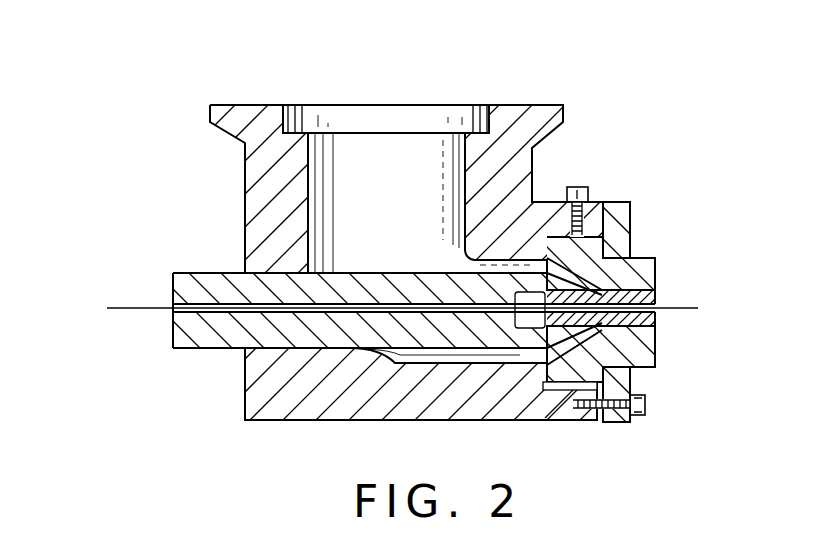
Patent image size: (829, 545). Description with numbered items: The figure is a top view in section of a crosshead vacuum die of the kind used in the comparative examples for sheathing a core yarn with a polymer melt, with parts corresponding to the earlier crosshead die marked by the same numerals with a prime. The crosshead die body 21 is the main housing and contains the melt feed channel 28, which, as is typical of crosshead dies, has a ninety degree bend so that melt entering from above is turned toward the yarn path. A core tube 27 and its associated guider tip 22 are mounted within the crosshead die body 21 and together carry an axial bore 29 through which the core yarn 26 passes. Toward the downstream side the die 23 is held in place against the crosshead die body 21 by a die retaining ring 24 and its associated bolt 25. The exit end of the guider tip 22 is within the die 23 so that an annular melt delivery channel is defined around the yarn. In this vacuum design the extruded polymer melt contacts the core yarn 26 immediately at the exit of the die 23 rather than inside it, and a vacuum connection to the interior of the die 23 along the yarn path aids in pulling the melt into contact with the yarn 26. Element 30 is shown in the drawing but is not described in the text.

The crosshead die body 21 is at (247, 197).
The guider tip 22 is at (650, 353).
The die 23 is at (647, 277).
The die retaining ring 24 is at (627, 220).
The bolt 25 is at (645, 405).
The core yarn 26 is at (120, 305).
The core tube 27 is at (227, 345).
The melt feed channel 28 is at (407, 206).
The axial bore 29 is at (172, 303).
The cap / cover plate 30 is at (455, 105).